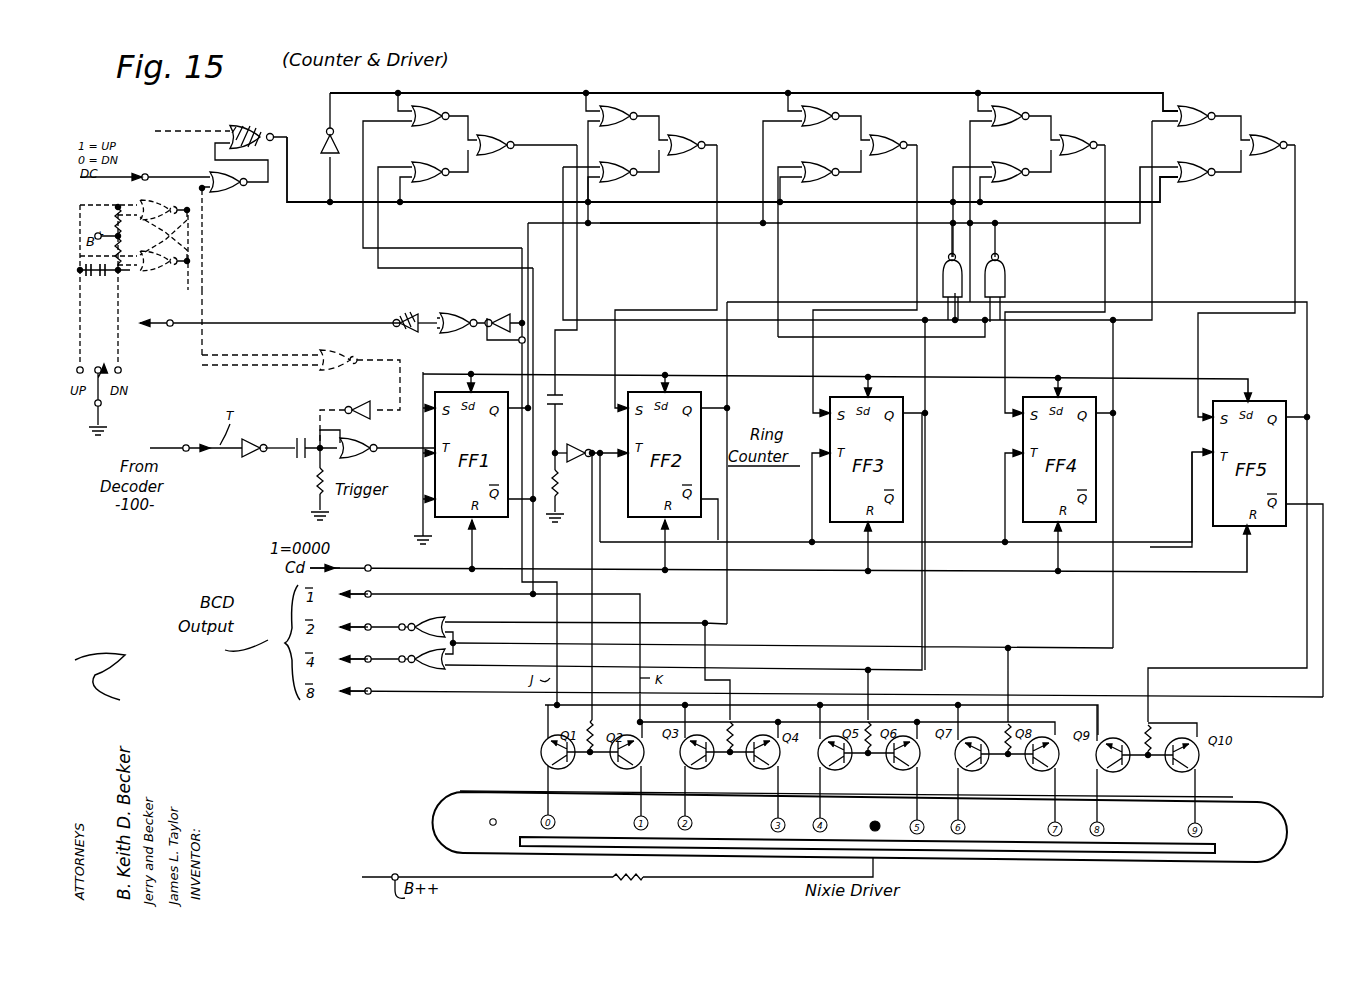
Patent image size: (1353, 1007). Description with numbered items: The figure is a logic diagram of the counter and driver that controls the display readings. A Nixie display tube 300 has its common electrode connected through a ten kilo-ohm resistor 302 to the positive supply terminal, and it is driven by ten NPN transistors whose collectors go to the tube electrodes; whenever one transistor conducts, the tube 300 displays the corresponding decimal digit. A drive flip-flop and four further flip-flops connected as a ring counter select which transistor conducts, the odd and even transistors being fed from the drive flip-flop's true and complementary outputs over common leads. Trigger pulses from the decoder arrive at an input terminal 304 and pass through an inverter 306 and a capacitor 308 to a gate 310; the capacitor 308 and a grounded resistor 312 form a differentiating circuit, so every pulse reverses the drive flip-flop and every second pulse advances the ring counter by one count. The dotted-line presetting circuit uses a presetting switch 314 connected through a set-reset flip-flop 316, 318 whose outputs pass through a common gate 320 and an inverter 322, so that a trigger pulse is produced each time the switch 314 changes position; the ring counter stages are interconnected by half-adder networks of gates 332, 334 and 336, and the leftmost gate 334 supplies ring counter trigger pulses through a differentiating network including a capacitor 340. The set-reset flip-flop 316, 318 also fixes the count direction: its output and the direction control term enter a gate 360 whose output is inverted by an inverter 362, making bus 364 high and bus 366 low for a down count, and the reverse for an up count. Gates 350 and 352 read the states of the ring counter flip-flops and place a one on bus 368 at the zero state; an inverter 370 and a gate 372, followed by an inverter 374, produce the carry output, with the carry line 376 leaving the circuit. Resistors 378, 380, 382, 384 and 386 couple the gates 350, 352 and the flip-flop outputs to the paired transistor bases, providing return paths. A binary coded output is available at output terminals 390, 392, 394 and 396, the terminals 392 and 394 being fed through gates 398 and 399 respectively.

The display tube 300 is at (370, 565).
The resistor 302 is at (620, 880).
The input terminal 304 is at (186, 445).
The inverter 306 is at (270, 432).
The capacitor 308 is at (296, 455).
The gate 310 is at (358, 458).
The resistor 312 is at (315, 490).
The presetting switch 314 is at (110, 402).
The flip-flop 316 is at (165, 208).
The flip-flop 318 is at (123, 254).
The gate 320 is at (345, 360).
The inverter 322 is at (370, 400).
The gate 332 is at (420, 112).
The gate 334 is at (488, 150).
The gate 336 is at (432, 176).
The capacitor 340 is at (560, 395).
The gate 350 is at (940, 280).
The gate 352 is at (1007, 276).
The gate 360 is at (225, 195).
The inverter 362 is at (322, 145).
The bus 364 is at (875, 205).
The bus 366 is at (690, 96).
The bus 368 is at (682, 226).
The inverter 370 is at (503, 316).
The gate 372 is at (455, 312).
The inverter 374 is at (408, 314).
The output line 376 is at (172, 327).
The resistor 378 is at (592, 725).
The resistor 380 is at (732, 724).
The resistor 382 is at (870, 724).
The resistor 384 is at (1010, 726).
The resistor 386 is at (1150, 726).
The output terminal 390 is at (372, 592).
The output terminal 392 is at (360, 626).
The output terminal 394 is at (356, 659).
The output terminal 396 is at (362, 694).
The gate 398 is at (425, 618).
The gate 399 is at (430, 672).